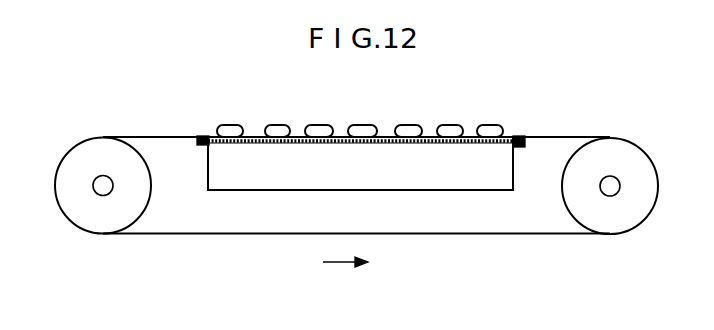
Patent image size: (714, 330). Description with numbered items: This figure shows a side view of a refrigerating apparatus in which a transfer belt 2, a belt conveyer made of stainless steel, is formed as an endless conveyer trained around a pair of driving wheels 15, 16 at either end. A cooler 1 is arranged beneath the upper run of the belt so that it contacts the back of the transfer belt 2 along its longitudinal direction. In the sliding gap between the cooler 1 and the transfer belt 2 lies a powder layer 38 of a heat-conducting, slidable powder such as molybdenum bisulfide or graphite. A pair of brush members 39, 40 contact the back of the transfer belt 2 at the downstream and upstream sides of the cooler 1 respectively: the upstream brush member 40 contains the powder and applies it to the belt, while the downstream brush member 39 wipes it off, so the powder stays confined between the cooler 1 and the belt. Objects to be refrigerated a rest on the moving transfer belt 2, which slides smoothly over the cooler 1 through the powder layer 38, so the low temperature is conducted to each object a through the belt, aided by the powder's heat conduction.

The cooler 1 is at (270, 190).
The transfer belt 2 is at (567, 137).
The driving wheel 15 is at (80, 148).
The driving wheel 16 is at (637, 152).
The powder layer 38 is at (298, 136).
The brush member 39 is at (201, 136).
The brush member 40 is at (516, 137).
The object to be refrigerated a is at (400, 125).